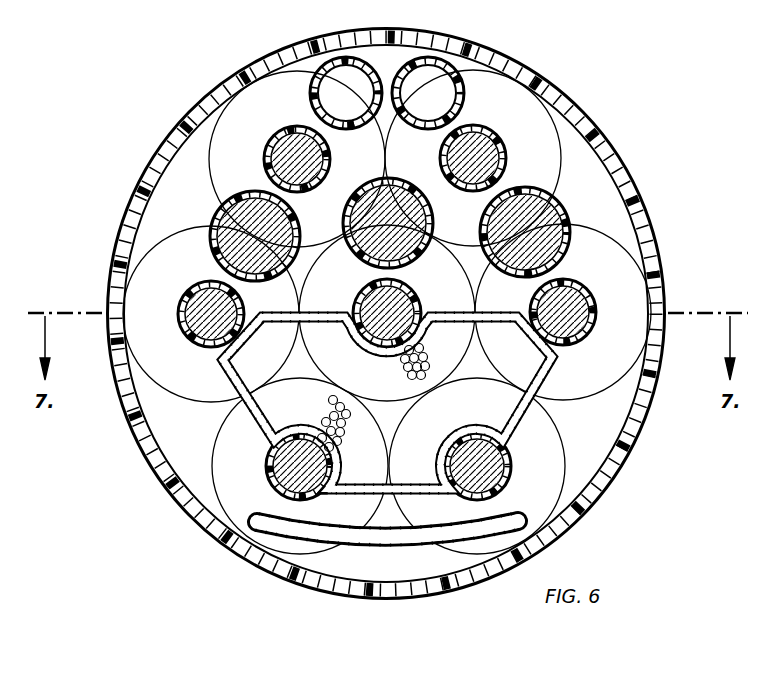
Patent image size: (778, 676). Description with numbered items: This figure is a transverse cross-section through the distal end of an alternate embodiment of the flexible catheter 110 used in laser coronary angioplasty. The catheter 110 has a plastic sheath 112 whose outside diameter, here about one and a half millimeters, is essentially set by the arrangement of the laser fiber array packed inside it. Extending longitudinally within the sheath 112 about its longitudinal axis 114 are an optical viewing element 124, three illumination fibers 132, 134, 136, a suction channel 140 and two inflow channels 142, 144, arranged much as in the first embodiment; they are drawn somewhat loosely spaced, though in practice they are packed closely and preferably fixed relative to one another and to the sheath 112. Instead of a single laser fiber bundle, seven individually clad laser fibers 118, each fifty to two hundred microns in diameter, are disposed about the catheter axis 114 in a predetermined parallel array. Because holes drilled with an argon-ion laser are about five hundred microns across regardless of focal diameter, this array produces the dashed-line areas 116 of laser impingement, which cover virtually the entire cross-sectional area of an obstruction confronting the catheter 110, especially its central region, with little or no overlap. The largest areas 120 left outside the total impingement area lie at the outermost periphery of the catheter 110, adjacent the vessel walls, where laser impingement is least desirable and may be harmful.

The catheter 110 is at (666, 438).
The plastic sheath 112 is at (600, 138).
The longitudinal axis 114 is at (364, 300).
The dashed line areas of laser impingement 116 is at (213, 142).
The individually clad laser fibers 118 is at (483, 147).
The areas not included in the laser impingement area 120 is at (182, 158).
The optical viewing element 124 is at (550, 392).
The illumination fiber 132 is at (226, 218).
The illumination fiber 134 is at (418, 217).
The illumination fiber 136 is at (558, 216).
The suction channel 140 is at (515, 506).
The inflow channel 142 is at (437, 58).
The inflow channel 144 is at (338, 58).